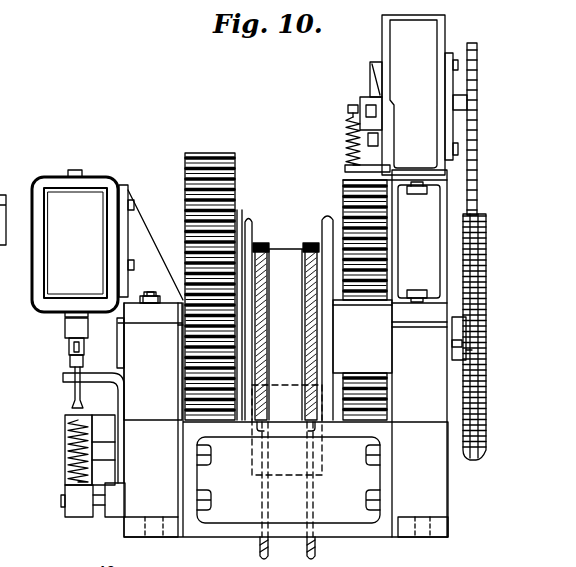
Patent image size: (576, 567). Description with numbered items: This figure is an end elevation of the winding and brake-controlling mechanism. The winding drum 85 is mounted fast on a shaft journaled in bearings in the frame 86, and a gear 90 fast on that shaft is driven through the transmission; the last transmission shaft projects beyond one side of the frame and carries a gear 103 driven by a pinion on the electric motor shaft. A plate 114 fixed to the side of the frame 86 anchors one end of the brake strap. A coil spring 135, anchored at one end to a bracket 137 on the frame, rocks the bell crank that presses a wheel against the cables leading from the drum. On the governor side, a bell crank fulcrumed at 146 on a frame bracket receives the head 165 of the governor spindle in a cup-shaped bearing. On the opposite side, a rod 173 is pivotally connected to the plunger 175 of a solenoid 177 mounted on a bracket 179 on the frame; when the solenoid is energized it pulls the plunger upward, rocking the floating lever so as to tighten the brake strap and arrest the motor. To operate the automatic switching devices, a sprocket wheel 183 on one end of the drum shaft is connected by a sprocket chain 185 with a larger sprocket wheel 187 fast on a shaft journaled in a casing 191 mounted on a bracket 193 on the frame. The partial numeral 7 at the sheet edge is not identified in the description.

The frame 86 is at (155, 406).
The plate 114 is at (120, 401).
The gear 103 is at (465, 443).
The winding drum 85 is at (248, 232).
The gear 90 is at (197, 153).
The sprocket chain 185 is at (465, 259).
The bracket 193 is at (392, 235).
The sprocket wheel 183 is at (468, 363).
The sprocket wheel 187 is at (448, 86).
The casing 191 is at (398, 39).
The solenoid 177 is at (58, 178).
The bracket 179 is at (137, 235).
The plunger 175 is at (74, 352).
The rod 173 is at (74, 362).
The bracket 137 is at (100, 380).
The coil spring 135 is at (70, 459).
The head 165 is at (0, 186).
The fulcrum 146 is at (15, 306).
The frame 7 is at (5, 362).